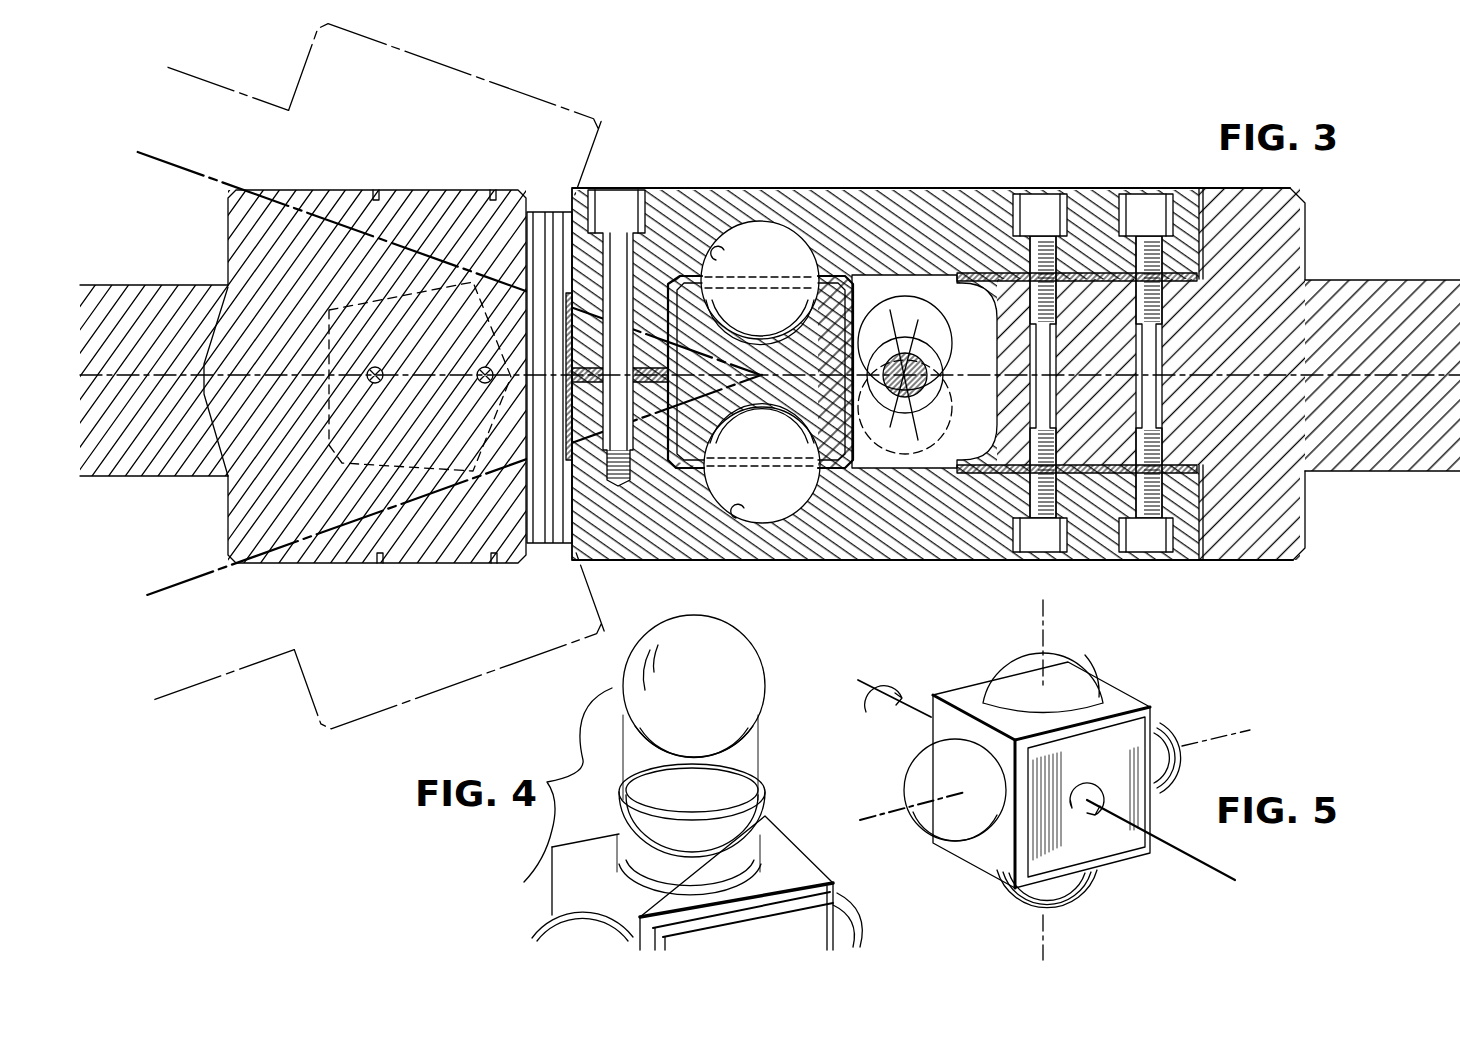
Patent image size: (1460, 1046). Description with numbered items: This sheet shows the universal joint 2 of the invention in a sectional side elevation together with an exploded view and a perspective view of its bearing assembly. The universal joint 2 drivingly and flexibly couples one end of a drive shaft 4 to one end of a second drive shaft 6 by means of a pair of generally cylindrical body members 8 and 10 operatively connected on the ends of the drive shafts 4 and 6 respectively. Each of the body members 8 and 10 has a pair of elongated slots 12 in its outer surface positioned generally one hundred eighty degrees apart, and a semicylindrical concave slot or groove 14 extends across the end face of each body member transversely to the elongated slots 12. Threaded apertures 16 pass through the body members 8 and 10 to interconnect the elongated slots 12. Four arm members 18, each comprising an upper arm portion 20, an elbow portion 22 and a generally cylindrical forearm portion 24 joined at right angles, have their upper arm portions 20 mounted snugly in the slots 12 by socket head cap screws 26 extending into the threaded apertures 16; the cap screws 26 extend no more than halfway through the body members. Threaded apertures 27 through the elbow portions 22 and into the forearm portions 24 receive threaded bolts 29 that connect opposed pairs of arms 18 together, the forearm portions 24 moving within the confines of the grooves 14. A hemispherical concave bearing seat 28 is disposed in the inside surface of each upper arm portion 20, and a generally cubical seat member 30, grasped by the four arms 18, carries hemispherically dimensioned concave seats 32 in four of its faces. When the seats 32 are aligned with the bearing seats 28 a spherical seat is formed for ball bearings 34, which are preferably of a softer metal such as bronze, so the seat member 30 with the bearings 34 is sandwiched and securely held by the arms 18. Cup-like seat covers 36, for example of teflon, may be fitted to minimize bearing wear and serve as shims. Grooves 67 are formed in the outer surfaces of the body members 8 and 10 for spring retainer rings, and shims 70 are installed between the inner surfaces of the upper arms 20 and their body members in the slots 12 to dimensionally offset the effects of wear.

In FIG. 3, the universal joint 2 is at (729, 147).
In FIG. 3, the drive shaft 4 is at (1382, 302).
In FIG. 3, the second drive shaft 6 is at (200, 78).
In FIG. 3, the body member 8 is at (1288, 236).
In FIG. 3, the body member 10 is at (292, 190).
In FIG. 3, the elongated slots 12 is at (330, 318).
In FIG. 3, the semicylindrical concave slot or groove 14 is at (996, 340).
In FIG. 3, the threaded apertures 16 is at (482, 370).
In FIG. 3, the arm members 18 is at (806, 170).
In FIG. 3, the upper arm portion 20 is at (920, 215).
In FIG. 3, the elbow portion 22 is at (573, 193).
In FIG. 3, the forearm portion 24 is at (682, 366).
In FIG. 3, the socket head cap screws 26 is at (1045, 215).
In FIG. 3, the threaded apertures 27 is at (615, 462).
In FIG. 3, the hemispherical concave bearing seat 28 is at (716, 256).
In FIG. 3, the threaded bolts 29 is at (630, 195).
In FIG. 3, the seat member 30 is at (836, 290).
In FIG. 4, the seat member 30 is at (778, 850).
In FIG. 5, the seat member 30 is at (1130, 700).
In FIG. 3, the concave seats 32 is at (714, 442).
In FIG. 4, the concave seats 32 is at (735, 888).
In FIG. 3, the ball bearings 34 is at (790, 252).
In FIG. 4, the ball bearings 34 is at (735, 686).
In FIG. 5, the ball bearings 34 is at (1020, 656).
In FIG. 4, the cup-like seat covers 36 is at (730, 797).
In FIG. 3, the grooves 67 is at (377, 192).
In FIG. 3, the shims 70 is at (1188, 283).